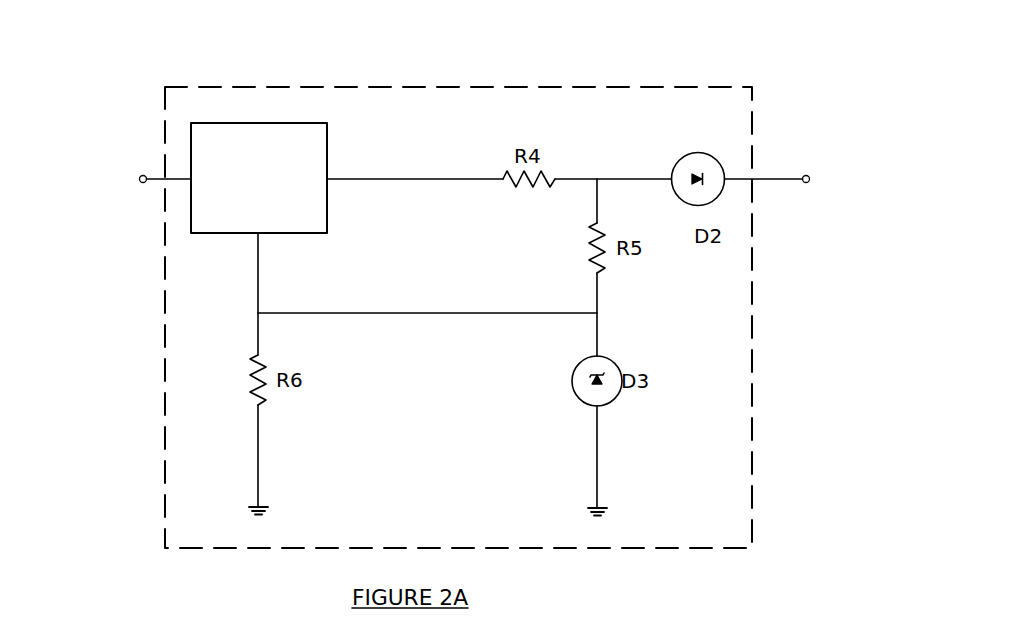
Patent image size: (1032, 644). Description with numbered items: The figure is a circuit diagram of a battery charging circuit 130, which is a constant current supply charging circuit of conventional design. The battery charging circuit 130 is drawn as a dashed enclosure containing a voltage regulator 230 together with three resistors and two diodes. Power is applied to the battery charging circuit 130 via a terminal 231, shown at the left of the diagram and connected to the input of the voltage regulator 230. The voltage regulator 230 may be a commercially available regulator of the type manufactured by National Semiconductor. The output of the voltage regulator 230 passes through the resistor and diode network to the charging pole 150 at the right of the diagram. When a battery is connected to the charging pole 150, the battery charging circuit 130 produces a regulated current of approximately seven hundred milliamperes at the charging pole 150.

The battery charging circuit 130 is at (437, 85).
The voltage regulator 230 is at (327, 160).
The terminal 231 is at (139, 172).
The charging pole 150 is at (810, 176).